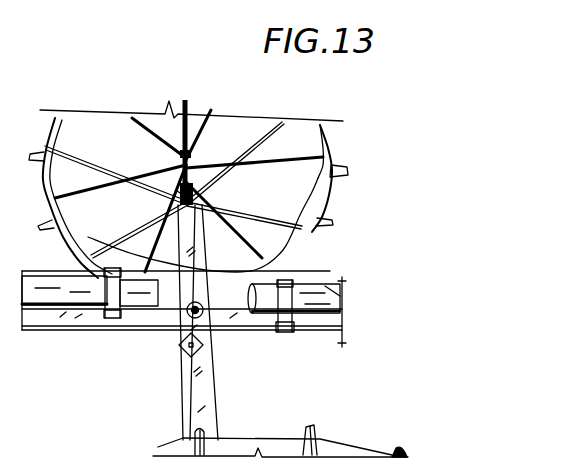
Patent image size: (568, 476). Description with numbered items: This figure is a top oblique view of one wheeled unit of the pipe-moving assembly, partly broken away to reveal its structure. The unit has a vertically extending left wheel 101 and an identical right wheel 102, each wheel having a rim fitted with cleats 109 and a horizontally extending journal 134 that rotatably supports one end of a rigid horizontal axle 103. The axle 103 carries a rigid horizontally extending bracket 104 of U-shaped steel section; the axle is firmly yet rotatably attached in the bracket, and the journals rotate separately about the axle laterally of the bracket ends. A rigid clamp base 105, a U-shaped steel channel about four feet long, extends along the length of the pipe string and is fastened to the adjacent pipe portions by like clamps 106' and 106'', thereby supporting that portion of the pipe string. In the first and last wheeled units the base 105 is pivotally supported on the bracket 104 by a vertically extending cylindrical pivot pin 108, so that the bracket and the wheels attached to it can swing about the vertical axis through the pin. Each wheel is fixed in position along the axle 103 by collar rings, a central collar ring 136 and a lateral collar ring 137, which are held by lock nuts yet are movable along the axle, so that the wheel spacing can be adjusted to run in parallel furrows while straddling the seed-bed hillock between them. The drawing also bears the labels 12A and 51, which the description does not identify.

The reflector dish assembly 12A is at (342, 229).
The post 51 is at (343, 286).
The left wheel 101 is at (282, 438).
The right wheel 102 is at (335, 165).
The axle 103 is at (191, 95).
The bracket 104 is at (199, 245).
The clamp base 105 is at (322, 332).
The clamp 106' is at (297, 295).
The clamp 106'' is at (90, 282).
The pivot pin 108 is at (182, 338).
The cleats 109 is at (396, 446).
The journal 134 is at (172, 193).
The collar ring 136 is at (203, 193).
The collar ring 137 is at (178, 156).